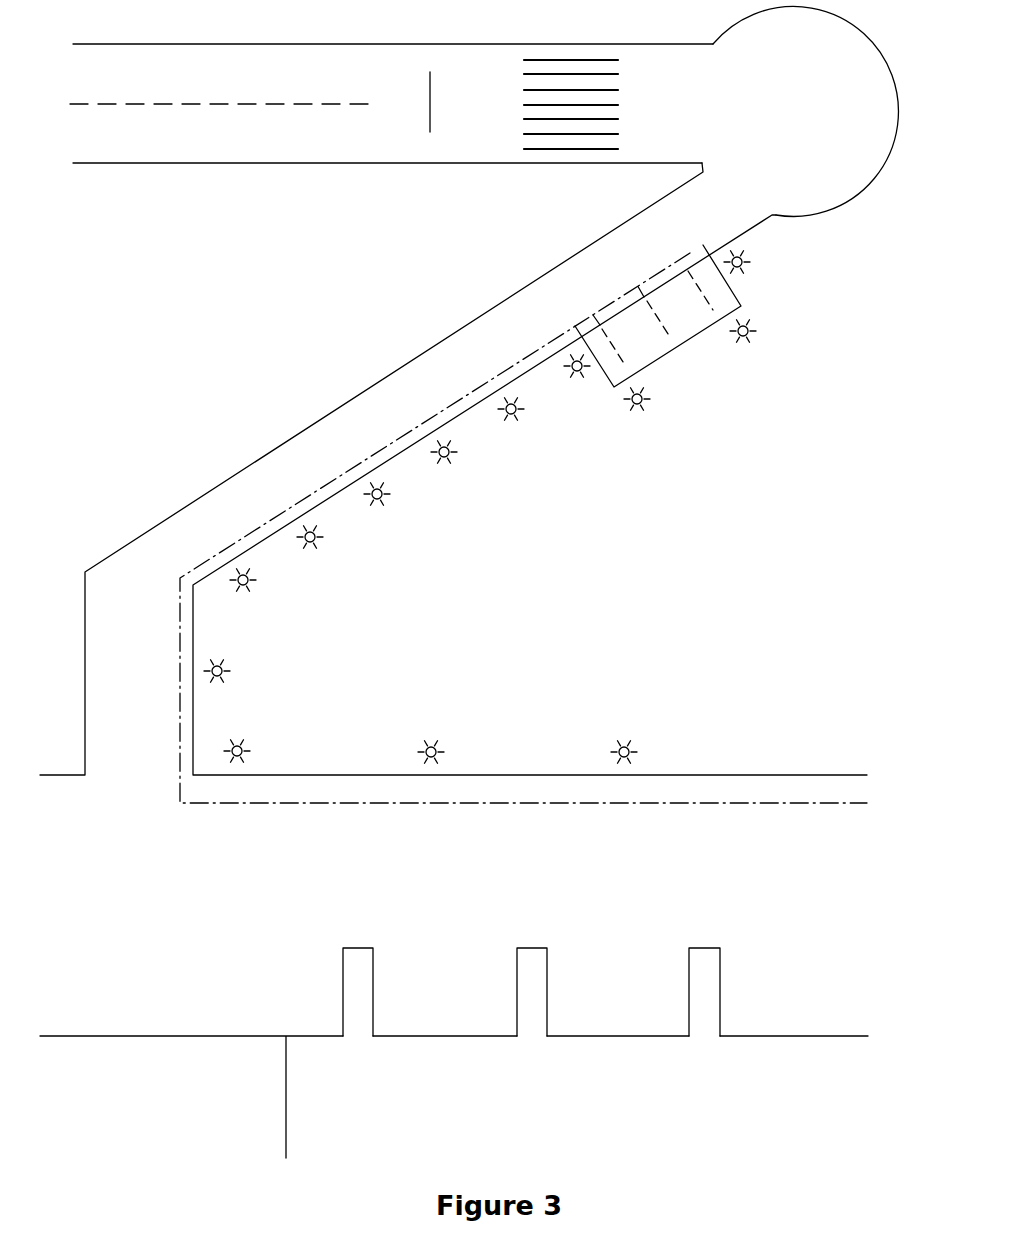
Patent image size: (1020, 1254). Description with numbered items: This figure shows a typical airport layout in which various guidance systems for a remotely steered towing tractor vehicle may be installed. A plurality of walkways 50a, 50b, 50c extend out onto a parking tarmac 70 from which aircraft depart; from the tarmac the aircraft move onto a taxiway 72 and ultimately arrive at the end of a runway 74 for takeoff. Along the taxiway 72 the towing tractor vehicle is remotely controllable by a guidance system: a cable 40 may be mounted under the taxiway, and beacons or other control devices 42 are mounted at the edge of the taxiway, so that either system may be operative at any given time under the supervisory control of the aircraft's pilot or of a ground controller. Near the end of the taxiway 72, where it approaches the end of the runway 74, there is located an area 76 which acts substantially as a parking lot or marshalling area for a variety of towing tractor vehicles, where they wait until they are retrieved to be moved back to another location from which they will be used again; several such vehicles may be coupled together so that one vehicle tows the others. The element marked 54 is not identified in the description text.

The runway 74 is at (273, 88).
The taxiway 72 is at (146, 698).
The cable 40 is at (330, 483).
The beacons or other control devices 42 is at (736, 341).
The area 76 is at (697, 306).
The parking tarmac 70 is at (370, 891).
The walkway 50a is at (365, 987).
The walkway 50b is at (537, 987).
The walkway 50c is at (710, 987).
The off interval between pulses 54 is at (636, 1042).